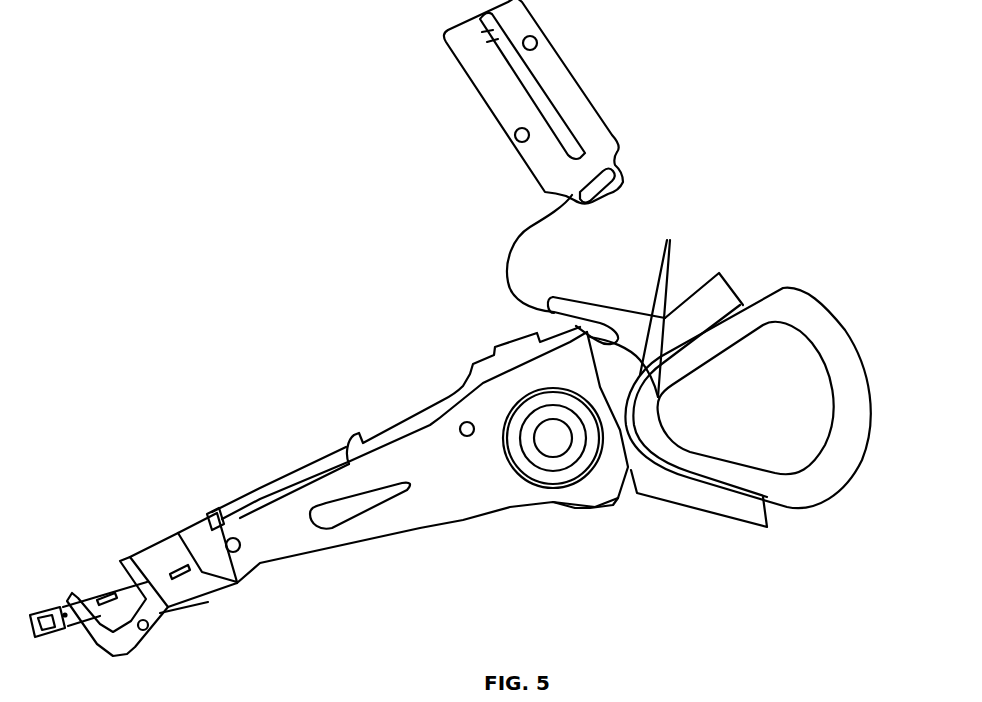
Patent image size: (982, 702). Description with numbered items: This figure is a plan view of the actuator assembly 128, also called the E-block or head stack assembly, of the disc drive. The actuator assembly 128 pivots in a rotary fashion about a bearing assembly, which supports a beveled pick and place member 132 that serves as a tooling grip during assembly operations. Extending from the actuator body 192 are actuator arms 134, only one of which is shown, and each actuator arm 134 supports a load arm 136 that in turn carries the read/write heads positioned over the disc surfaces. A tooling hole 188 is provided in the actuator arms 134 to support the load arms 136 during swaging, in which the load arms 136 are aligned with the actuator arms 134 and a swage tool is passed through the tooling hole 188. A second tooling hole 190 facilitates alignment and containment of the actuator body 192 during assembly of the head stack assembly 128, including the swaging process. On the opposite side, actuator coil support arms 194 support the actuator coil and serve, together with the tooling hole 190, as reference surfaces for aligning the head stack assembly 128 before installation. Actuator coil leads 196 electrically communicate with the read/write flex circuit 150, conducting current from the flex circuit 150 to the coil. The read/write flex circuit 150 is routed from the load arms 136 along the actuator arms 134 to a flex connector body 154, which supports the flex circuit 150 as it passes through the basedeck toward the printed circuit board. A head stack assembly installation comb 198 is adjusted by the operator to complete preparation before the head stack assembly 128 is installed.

The actuator assembly 128 is at (351, 126).
The flex connector body 154 is at (573, 110).
The read/write flex circuit 150 is at (513, 247).
The actuator coil support arms 194 is at (717, 303).
The actuator coil leads 196 is at (664, 306).
The actuator arms 134 is at (397, 520).
The actuator body 192 is at (573, 510).
The beveled pick and place member 132 is at (568, 475).
The tooling hole 190 is at (465, 422).
The tooling hole 188 is at (236, 538).
The load arms 136 is at (150, 563).
The head stack assembly installation comb 198 is at (160, 606).